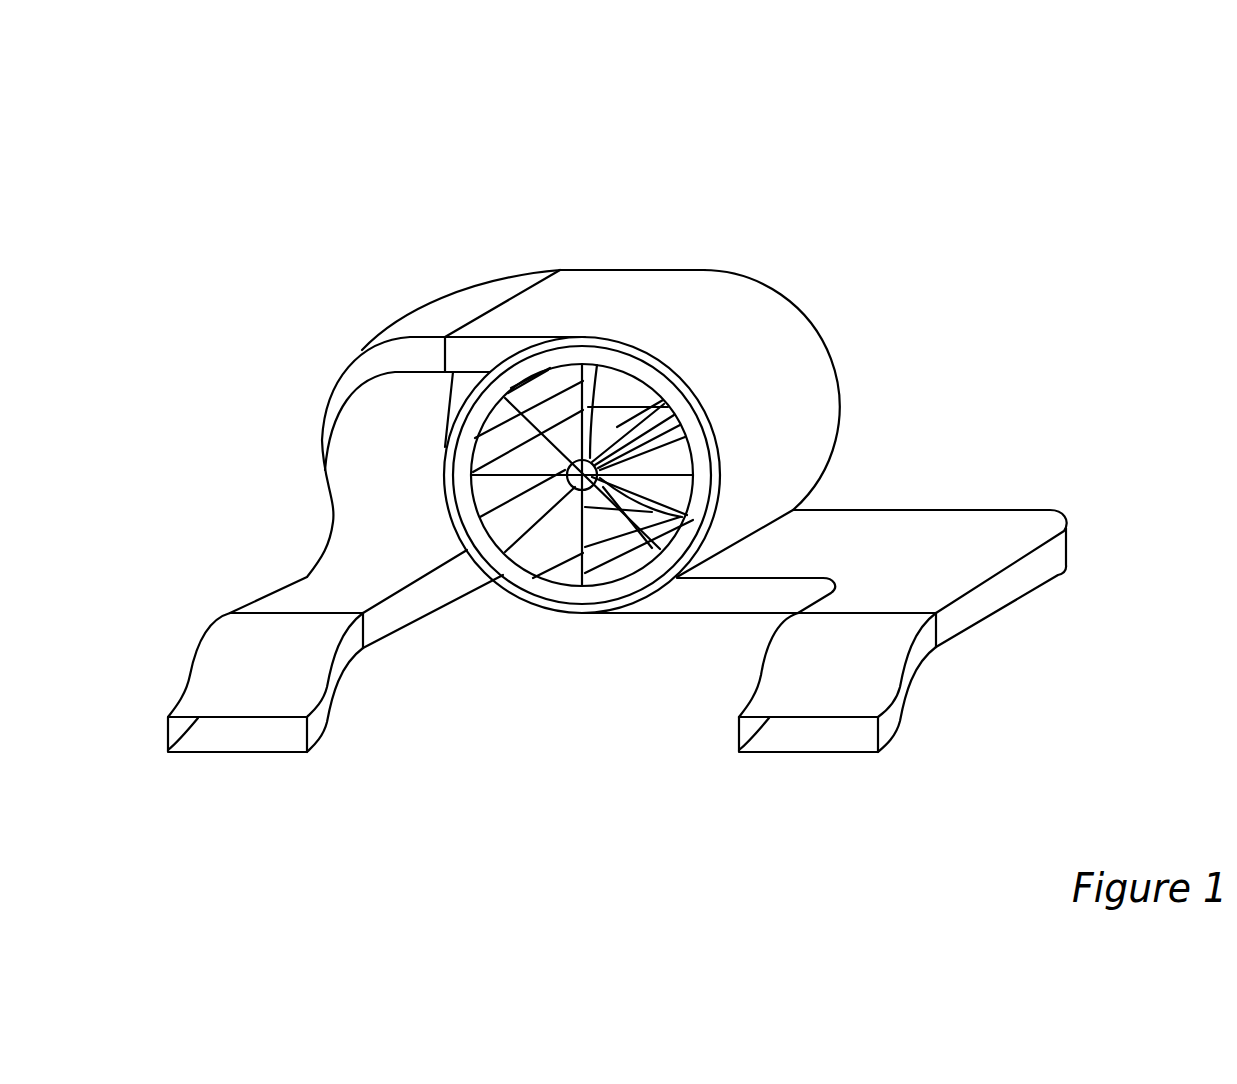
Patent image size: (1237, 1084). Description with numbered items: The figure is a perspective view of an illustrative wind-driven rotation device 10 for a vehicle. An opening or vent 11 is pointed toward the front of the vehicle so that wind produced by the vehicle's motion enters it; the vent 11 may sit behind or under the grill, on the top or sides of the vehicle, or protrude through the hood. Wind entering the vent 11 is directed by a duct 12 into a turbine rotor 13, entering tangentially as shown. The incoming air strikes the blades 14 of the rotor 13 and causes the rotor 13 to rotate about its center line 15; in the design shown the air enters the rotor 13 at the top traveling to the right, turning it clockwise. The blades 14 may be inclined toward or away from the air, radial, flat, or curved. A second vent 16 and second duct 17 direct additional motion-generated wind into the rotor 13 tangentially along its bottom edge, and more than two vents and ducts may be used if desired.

The wind-driven rotation device 10 is at (962, 207).
The vent 11 is at (243, 733).
The duct 12 is at (447, 308).
The turbine rotor 13 is at (568, 597).
The blades 14 is at (542, 555).
The center line 15 is at (585, 488).
The second vent 16 is at (815, 733).
The second duct 17 is at (955, 525).